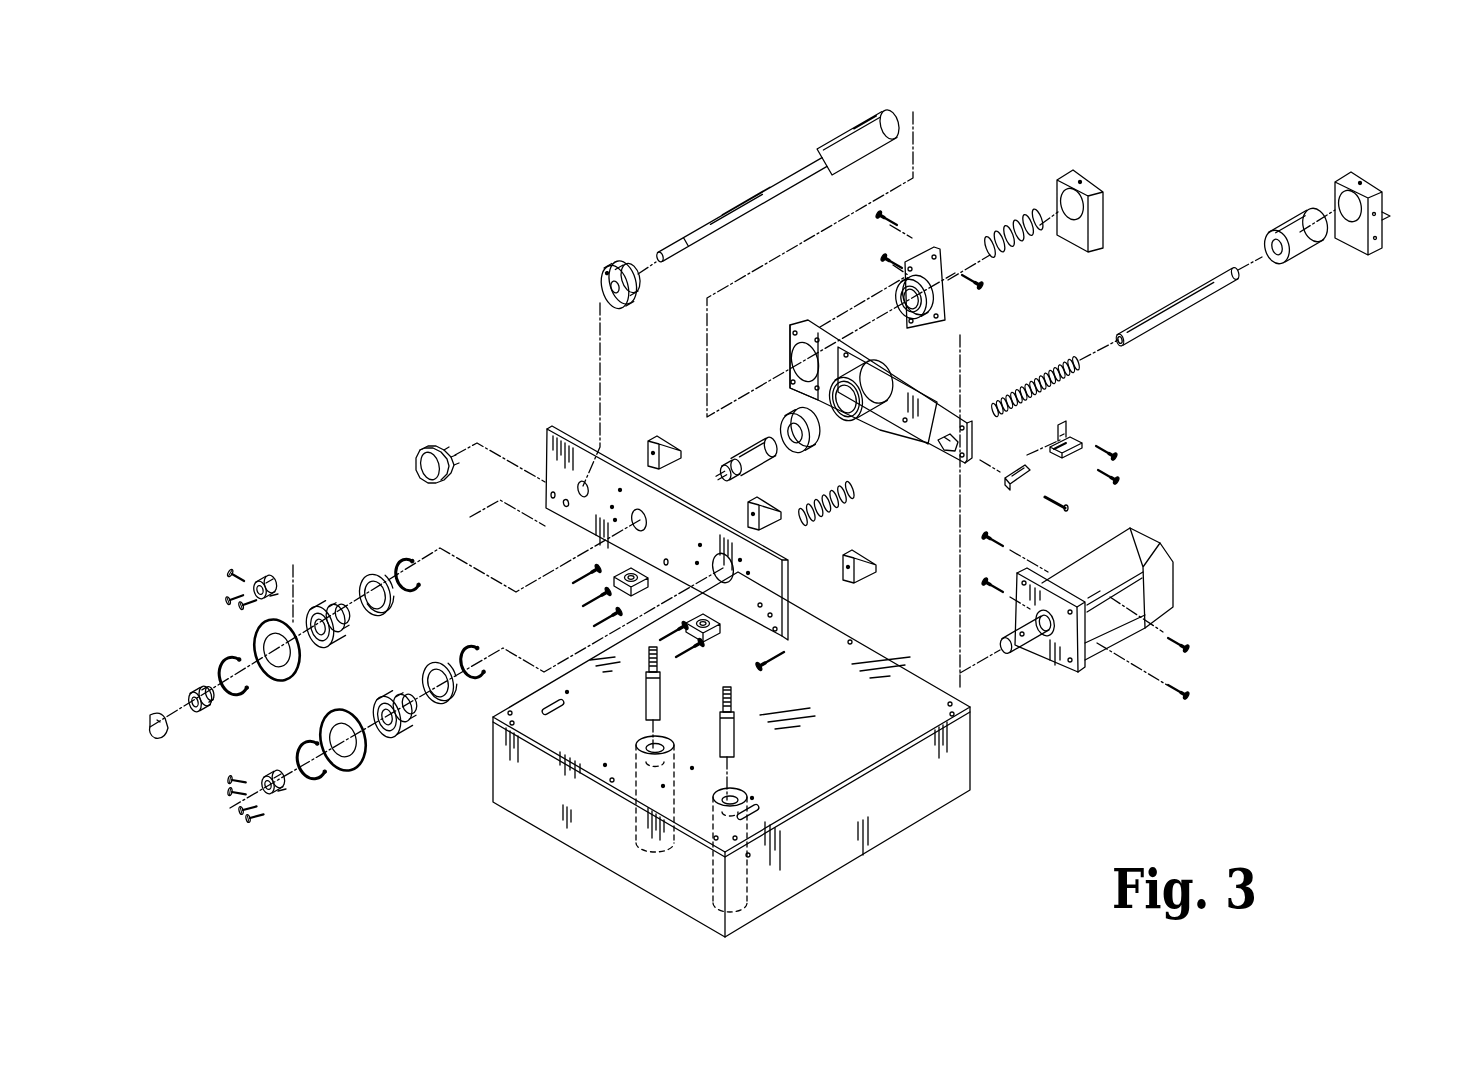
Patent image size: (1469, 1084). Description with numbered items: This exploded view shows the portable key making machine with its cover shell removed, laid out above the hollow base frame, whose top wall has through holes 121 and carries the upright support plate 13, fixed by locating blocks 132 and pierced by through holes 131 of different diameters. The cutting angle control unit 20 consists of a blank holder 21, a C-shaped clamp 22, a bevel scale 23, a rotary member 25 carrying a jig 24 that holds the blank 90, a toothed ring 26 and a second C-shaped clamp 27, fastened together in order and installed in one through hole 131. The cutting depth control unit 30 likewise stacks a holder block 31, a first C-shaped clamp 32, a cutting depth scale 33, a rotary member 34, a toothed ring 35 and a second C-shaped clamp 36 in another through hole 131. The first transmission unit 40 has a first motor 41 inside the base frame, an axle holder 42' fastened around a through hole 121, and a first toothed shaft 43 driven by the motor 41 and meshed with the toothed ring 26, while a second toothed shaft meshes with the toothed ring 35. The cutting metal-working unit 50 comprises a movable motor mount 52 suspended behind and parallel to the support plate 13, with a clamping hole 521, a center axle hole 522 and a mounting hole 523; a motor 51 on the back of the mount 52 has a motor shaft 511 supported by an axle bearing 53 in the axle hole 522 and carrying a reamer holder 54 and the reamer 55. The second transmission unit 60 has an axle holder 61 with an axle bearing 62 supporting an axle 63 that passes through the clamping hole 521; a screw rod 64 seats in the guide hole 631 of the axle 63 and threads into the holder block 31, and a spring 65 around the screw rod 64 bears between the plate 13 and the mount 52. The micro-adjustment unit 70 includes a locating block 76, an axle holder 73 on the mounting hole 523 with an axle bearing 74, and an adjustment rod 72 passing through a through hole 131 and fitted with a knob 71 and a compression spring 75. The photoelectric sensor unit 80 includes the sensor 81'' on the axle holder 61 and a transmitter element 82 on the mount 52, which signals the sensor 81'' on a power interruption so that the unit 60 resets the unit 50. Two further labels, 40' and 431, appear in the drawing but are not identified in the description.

The upright support plate 13 is at (530, 438).
The through holes 131 is at (580, 482).
The locating blocks 132 is at (866, 575).
The cutting angle control unit 20 is at (320, 490).
The blank holder 21 is at (197, 713).
The C-shaped clamp 22 is at (243, 692).
The bevel scale 23 is at (300, 667).
The jig 24 is at (265, 578).
The rotary member 25 is at (345, 630).
The toothed ring 26 is at (367, 578).
The second C-shaped clamp 27 is at (404, 560).
The cutting depth control unit 30 is at (386, 848).
The holder block 31 is at (280, 800).
The first C-shaped clamp 32 is at (313, 780).
The cutting depth scale 33 is at (347, 770).
The rotary member 34 is at (400, 735).
The toothed ring 35 is at (444, 702).
The second C-shaped clamp 36 is at (472, 650).
The first transmission unit 40 is at (731, 759).
The boss on base 40' is at (705, 854).
The first motor 41 is at (632, 805).
The axle holder 42' is at (666, 642).
The first toothed shaft 43 is at (643, 692).
The pin 431 is at (733, 735).
The through holes 121 is at (745, 795).
The cutting metal-working unit 50 is at (1125, 698).
The motor 51 is at (1172, 598).
The motor shaft 511 is at (1020, 655).
The movable motor mount 52 is at (960, 397).
The clamping hole 521 is at (942, 448).
The center axle hole 522 is at (845, 422).
The mounting hole 523 is at (790, 362).
The axle bearing 53 is at (815, 445).
The reamer holder 54 is at (747, 452).
The reamer 55 is at (720, 478).
The second transmission unit 60 is at (1240, 222).
The axle holder 61 is at (1388, 225).
The axle bearing 62 is at (1302, 248).
The axle 63 is at (1192, 302).
The guide hole 631 is at (1125, 345).
The screw rod 64 is at (1062, 387).
The spring 65 is at (855, 507).
The micro-adjustment unit 70 is at (953, 150).
The knob 71 is at (428, 447).
The adjustment rod 72 is at (775, 198).
The axle holder 73 is at (617, 266).
The axle bearing 74 is at (925, 262).
The compression spring 75 is at (1011, 235).
The locating block 76 is at (1087, 180).
The photoelectric sensor unit 80 is at (1162, 475).
The sensor 81'' is at (1101, 470).
The transmitter element 82 is at (1012, 487).
The blank 90 is at (155, 738).